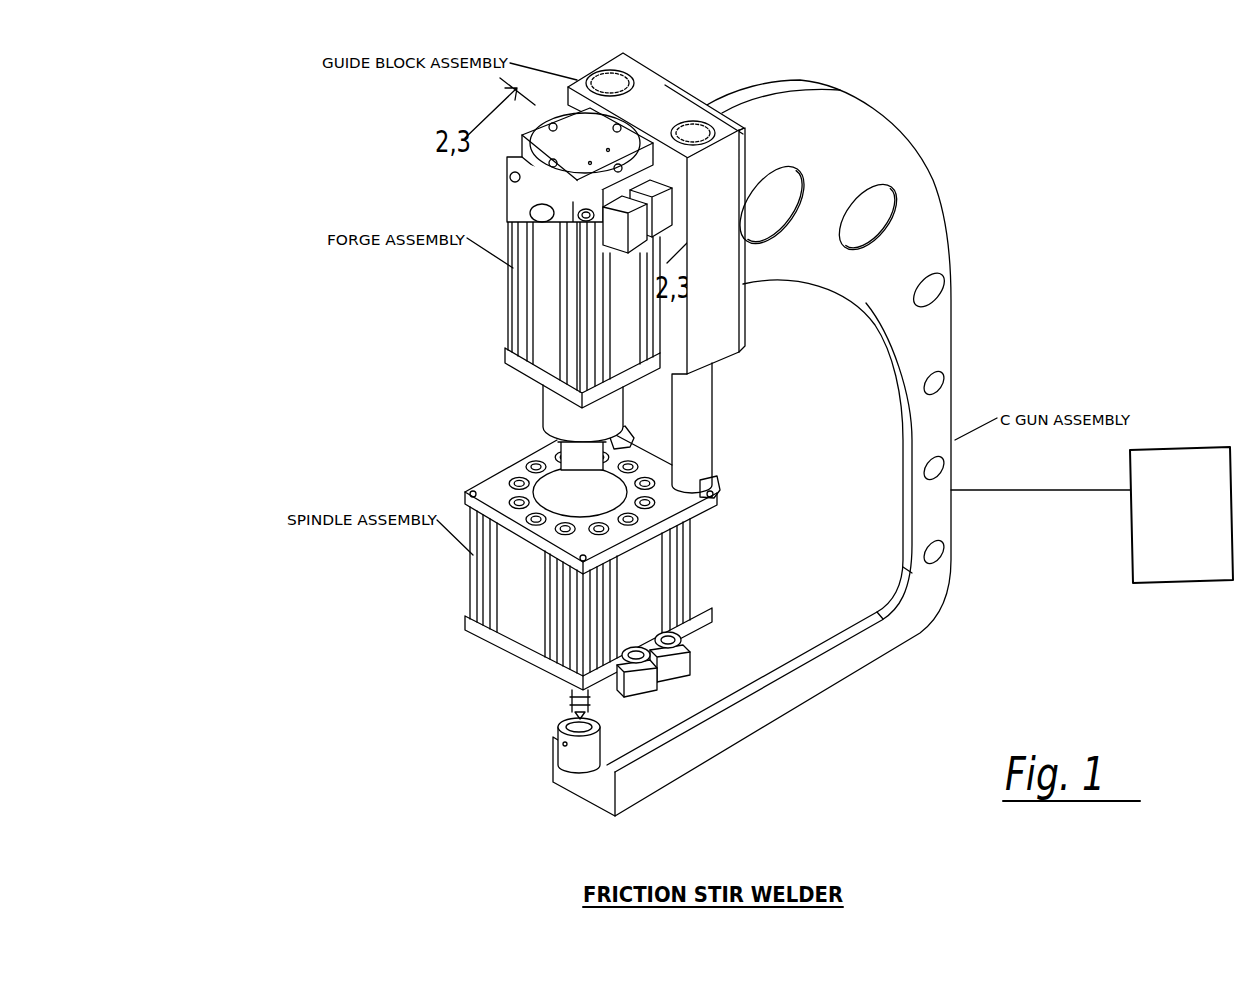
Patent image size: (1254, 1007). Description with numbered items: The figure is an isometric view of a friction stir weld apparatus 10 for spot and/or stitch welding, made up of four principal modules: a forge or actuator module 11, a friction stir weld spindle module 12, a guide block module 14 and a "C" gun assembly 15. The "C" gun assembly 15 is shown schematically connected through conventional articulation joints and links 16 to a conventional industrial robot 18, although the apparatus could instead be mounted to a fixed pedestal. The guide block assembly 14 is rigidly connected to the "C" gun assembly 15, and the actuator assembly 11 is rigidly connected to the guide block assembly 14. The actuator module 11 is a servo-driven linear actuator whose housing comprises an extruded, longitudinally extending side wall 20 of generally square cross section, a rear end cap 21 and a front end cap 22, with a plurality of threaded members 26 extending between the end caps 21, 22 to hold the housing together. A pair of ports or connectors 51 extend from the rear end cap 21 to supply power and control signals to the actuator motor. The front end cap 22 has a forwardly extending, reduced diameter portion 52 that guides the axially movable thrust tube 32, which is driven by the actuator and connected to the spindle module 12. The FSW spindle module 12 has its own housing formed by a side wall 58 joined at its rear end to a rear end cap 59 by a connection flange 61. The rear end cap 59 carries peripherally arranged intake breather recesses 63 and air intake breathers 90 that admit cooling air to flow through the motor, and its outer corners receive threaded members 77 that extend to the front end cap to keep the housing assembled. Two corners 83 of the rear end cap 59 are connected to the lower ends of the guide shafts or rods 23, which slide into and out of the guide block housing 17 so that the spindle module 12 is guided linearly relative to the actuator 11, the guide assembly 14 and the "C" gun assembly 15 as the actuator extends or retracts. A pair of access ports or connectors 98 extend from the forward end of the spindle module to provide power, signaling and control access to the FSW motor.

The friction stir weld apparatus 10 is at (704, 60).
The forge or actuator module 11 is at (495, 328).
The friction stir weld spindle module 12 is at (451, 605).
The guide block module 14 is at (616, 48).
The C gun assembly 15 is at (923, 138).
The articulation joints and links 16 is at (1033, 493).
The guide block housing 17 is at (712, 287).
The industrial robot 18 is at (1180, 560).
The side wall 20 is at (548, 282).
The rear end cap 21 is at (543, 178).
The front end cap 22 is at (530, 375).
The guide shafts or rods 23 is at (698, 397).
The threaded members 26 is at (512, 212).
The thrust tube 32 is at (655, 463).
The ports or connectors 51 is at (633, 228).
The reduced diameter portion 52 is at (560, 405).
The side wall 58 is at (480, 620).
The rear end cap 59 is at (497, 503).
The connection flange 61 is at (507, 650).
The intake breather recesses 63 is at (560, 466).
The threaded members 77 is at (580, 623).
The corners 83 is at (634, 440).
The air intake breathers 90 is at (583, 485).
The access ports or connectors 98 is at (650, 686).